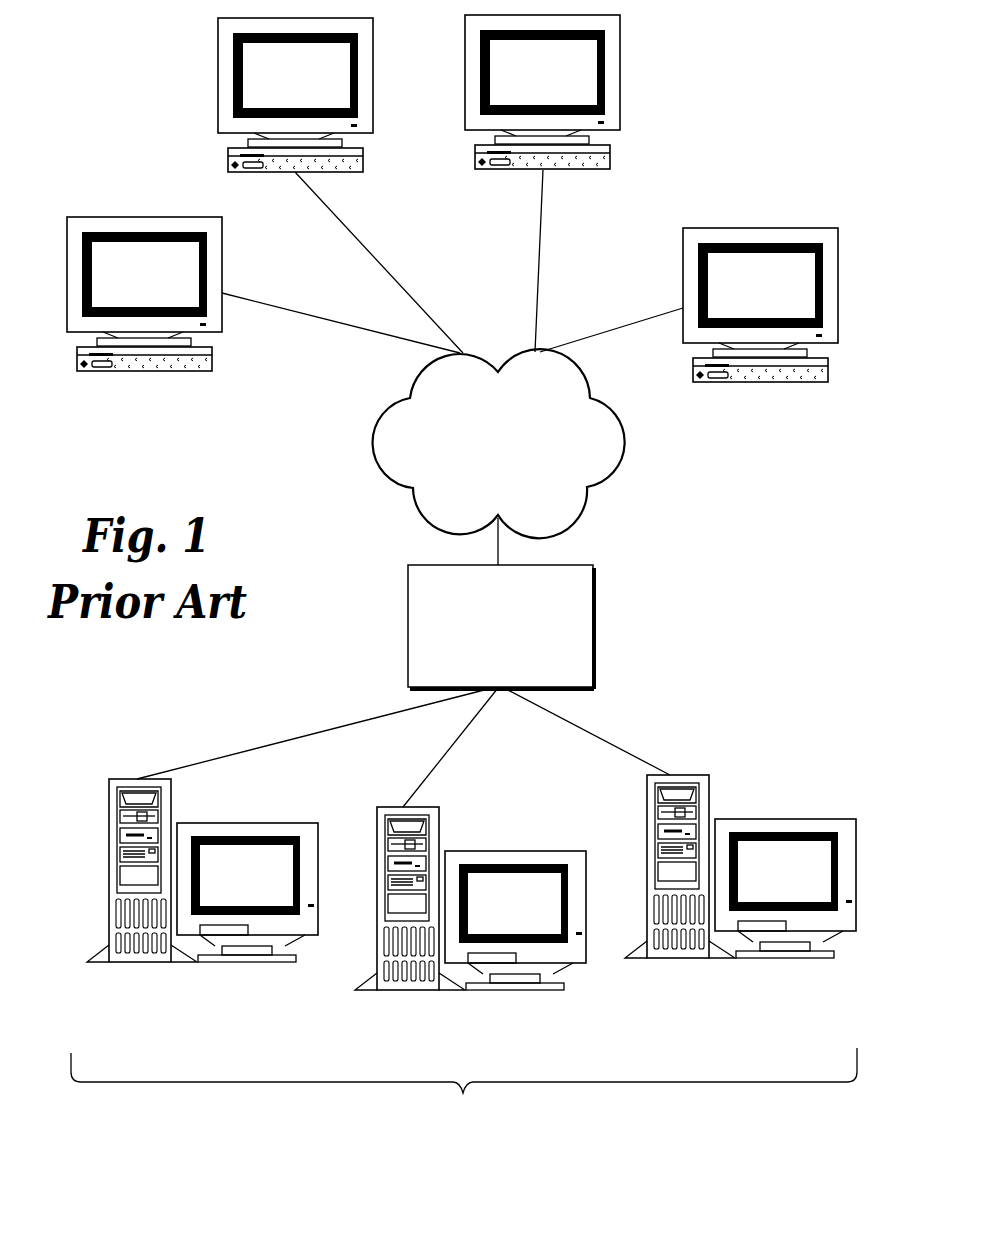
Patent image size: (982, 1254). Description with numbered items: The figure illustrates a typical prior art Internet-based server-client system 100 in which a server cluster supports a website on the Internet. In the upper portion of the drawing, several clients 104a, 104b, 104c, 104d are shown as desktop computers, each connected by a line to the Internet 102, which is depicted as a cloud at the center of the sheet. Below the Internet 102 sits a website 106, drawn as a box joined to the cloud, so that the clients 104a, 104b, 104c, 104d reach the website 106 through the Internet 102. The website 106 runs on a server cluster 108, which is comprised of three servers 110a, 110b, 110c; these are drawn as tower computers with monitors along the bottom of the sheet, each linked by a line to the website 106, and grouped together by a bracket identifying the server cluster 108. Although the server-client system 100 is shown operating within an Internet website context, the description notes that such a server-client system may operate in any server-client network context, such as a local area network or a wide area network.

The Internet-based server-client system 100 is at (715, 547).
The Internet 102 is at (483, 466).
The client 104a is at (143, 373).
The client 104b is at (218, 93).
The client 104c is at (622, 88).
The client 104d is at (760, 381).
The website 106 is at (483, 649).
The server cluster 108 is at (443, 1153).
The server 110a is at (188, 1022).
The server 110b is at (466, 1056).
The server 110c is at (743, 1024).